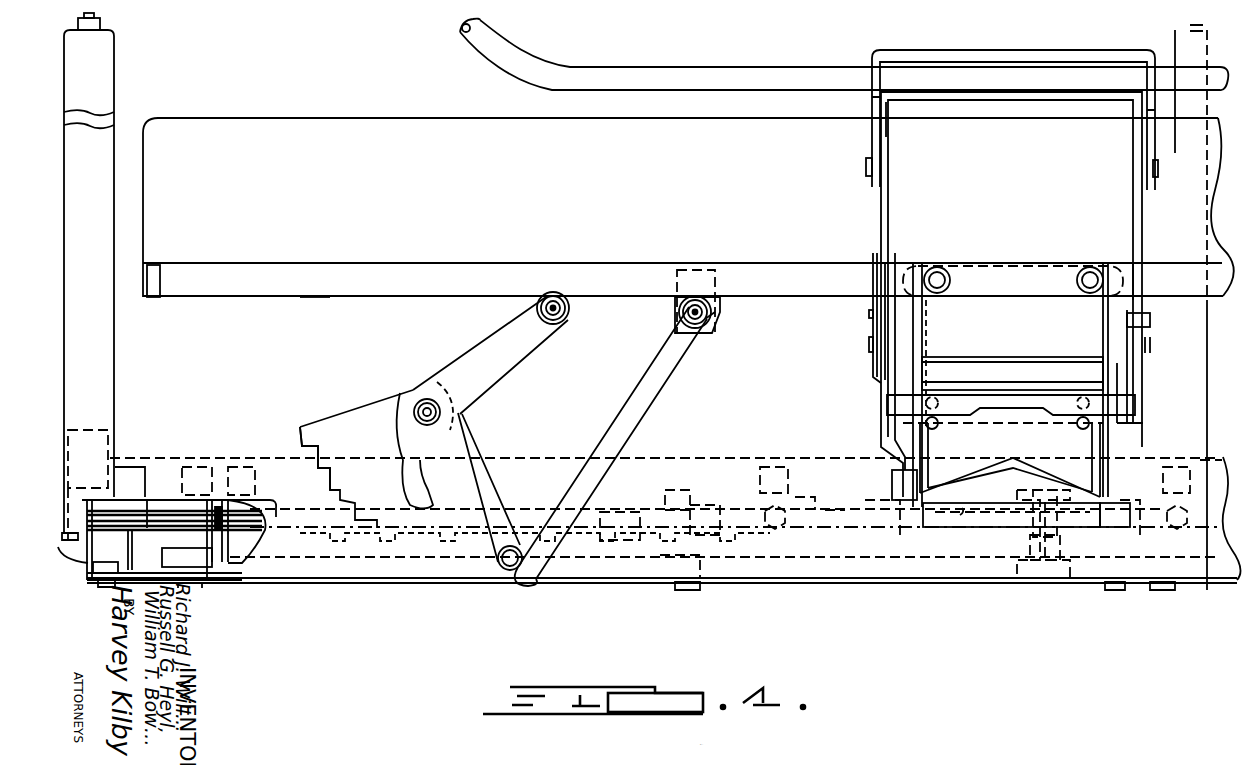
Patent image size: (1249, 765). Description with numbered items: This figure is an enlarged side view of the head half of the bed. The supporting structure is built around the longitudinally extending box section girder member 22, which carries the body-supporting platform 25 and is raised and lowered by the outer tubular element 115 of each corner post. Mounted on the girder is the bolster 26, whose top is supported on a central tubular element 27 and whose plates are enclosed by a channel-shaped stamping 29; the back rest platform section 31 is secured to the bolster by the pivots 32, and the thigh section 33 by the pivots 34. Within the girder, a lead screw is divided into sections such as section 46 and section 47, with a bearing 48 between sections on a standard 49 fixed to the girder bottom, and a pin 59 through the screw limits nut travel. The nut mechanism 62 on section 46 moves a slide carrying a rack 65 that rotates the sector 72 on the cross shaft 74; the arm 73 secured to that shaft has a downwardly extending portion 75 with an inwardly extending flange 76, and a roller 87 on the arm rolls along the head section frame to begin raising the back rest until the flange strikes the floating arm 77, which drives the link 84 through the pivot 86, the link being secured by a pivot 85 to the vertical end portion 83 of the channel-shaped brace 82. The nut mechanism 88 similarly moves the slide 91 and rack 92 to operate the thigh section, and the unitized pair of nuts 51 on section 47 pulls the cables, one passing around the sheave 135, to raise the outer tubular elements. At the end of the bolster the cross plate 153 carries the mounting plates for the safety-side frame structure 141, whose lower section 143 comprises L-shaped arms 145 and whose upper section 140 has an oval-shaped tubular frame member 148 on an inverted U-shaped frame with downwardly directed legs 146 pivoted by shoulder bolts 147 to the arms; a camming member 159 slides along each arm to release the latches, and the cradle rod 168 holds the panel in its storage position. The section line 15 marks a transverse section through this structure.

The outer tubular element 115 is at (86, 288).
The platform 25 is at (203, 299).
The back rest platform section 31 is at (316, 292).
The safety-side frame structure 141 is at (510, 63).
The oval-shaped tubular frame member 148 is at (466, 35).
The upper section 140 is at (968, 38).
The shoulder bolt 147 is at (866, 164).
The downwardly directed leg 146 is at (872, 101).
The L-shaped arm 145 is at (881, 201).
The section line 15 is at (1170, 28).
The lower section 143 is at (860, 313).
The camming member 159 is at (893, 232).
The bolster 26 is at (1065, 328).
The channel-shaped stamping 29 is at (1010, 268).
The pivot 32 is at (945, 288).
The pivot 34 is at (1078, 285).
The thigh section 33 is at (1165, 292).
The central tubular element 27 is at (975, 395).
The cross plate 153 is at (1017, 418).
The cradle rod 168 is at (975, 481).
The roller 87 is at (558, 292).
The arm 73 is at (520, 364).
The cross shaft 74 is at (425, 400).
The sector 72 is at (380, 405).
The downwardly extending portion 75 is at (405, 447).
The inwardly extending flange 76 is at (398, 497).
The arm 77 is at (480, 487).
The link 84 is at (660, 379).
The pivot 86 is at (512, 580).
The pivot 85 is at (716, 318).
The channel-shaped brace 82 is at (712, 338).
The vertical end portion 83 is at (674, 306).
The box section girder member 22 is at (968, 568).
The lead screw section 47 is at (598, 512).
The bearing 48 is at (695, 505).
The nut mechanism 62 is at (800, 497).
The lead screw section 46 is at (832, 510).
The pin 59 is at (934, 533).
The standard 49 is at (682, 590).
The rack 92 is at (1113, 568).
The slide 91 is at (1163, 585).
The nut mechanism 88 is at (1207, 470).
The rack 65 is at (318, 511).
The sheave 135 is at (148, 507).
The nut mechanism 51 is at (210, 493).